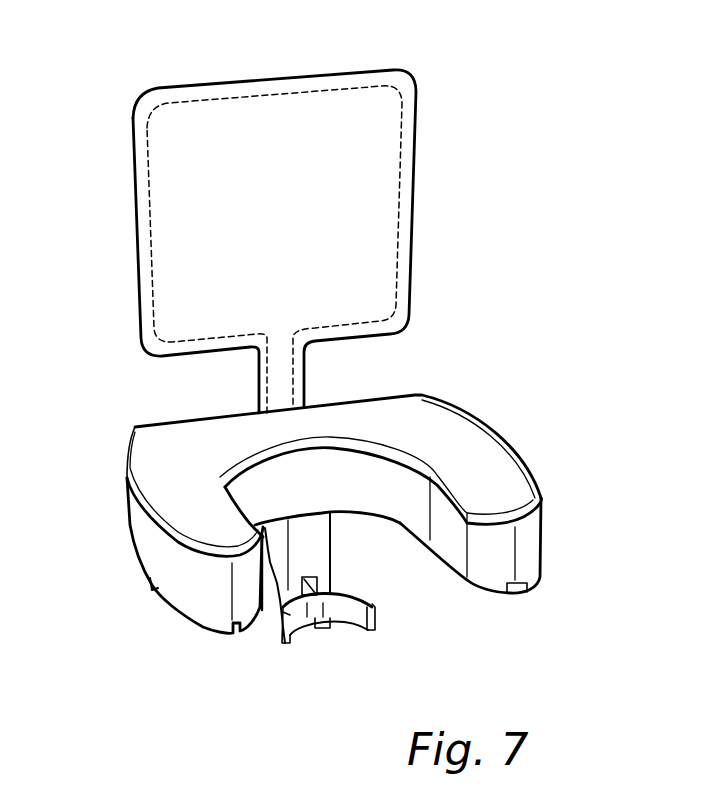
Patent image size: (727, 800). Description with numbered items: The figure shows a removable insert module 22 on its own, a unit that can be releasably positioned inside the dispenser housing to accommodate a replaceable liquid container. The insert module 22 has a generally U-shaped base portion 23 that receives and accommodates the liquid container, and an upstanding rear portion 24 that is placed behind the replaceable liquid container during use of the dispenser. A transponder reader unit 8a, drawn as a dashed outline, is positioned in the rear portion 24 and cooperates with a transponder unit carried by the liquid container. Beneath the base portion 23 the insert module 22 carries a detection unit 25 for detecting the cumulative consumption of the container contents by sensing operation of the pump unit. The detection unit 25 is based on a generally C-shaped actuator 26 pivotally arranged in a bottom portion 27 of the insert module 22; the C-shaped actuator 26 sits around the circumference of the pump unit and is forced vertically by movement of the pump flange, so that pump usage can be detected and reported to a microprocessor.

The insert module 22 is at (474, 276).
The rear portion 24 is at (138, 267).
The transponder reader unit 8a is at (138, 183).
The base portion 23 is at (193, 530).
The detection unit 25 is at (372, 646).
The C-shaped actuator 26 is at (298, 610).
The bottom portion 27 is at (327, 550).